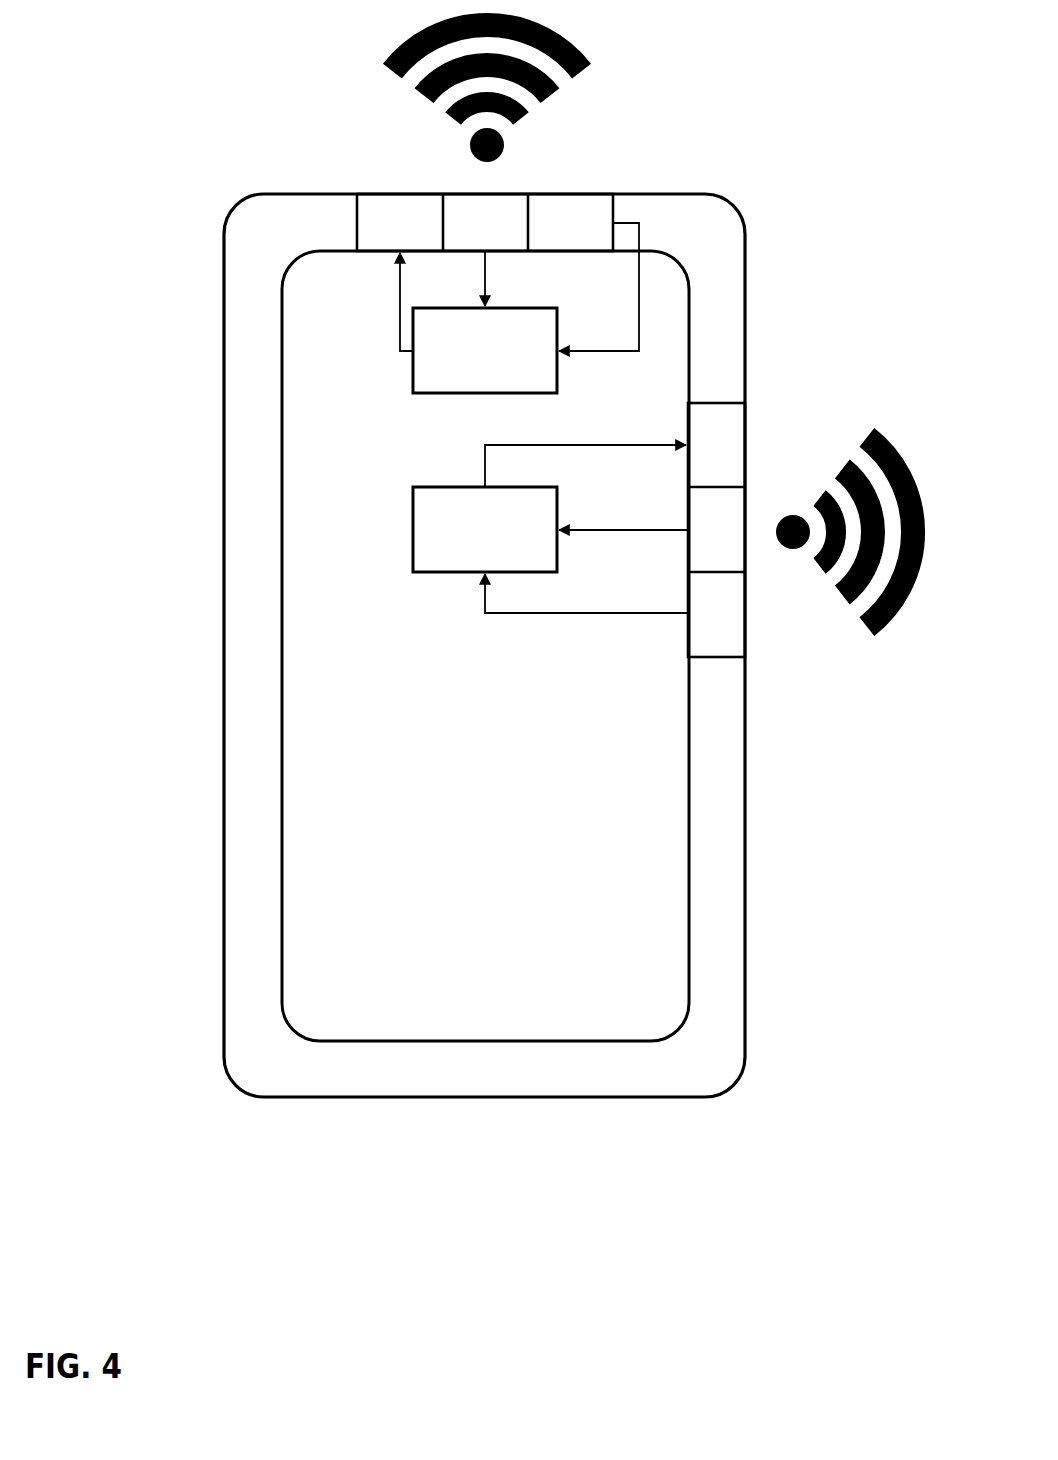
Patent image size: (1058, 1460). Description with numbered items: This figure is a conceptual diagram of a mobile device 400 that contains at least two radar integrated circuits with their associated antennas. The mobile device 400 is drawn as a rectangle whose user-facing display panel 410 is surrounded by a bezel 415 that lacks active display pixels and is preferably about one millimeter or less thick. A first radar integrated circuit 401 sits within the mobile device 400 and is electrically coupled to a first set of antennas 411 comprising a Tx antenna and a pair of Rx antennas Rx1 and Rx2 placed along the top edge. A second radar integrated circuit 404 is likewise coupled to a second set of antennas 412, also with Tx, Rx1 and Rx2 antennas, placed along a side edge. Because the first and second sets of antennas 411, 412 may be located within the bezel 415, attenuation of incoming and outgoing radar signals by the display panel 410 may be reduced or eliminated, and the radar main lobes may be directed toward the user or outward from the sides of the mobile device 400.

The mobile device 400 is at (925, 30).
The first radar integrated circuit 401 is at (504, 381).
The second radar IC 404 is at (504, 560).
The display panel 410 is at (505, 672).
The first set of antennas 411 is at (543, 193).
The second set of antennas 412 is at (747, 592).
The bezel 415 is at (224, 307).